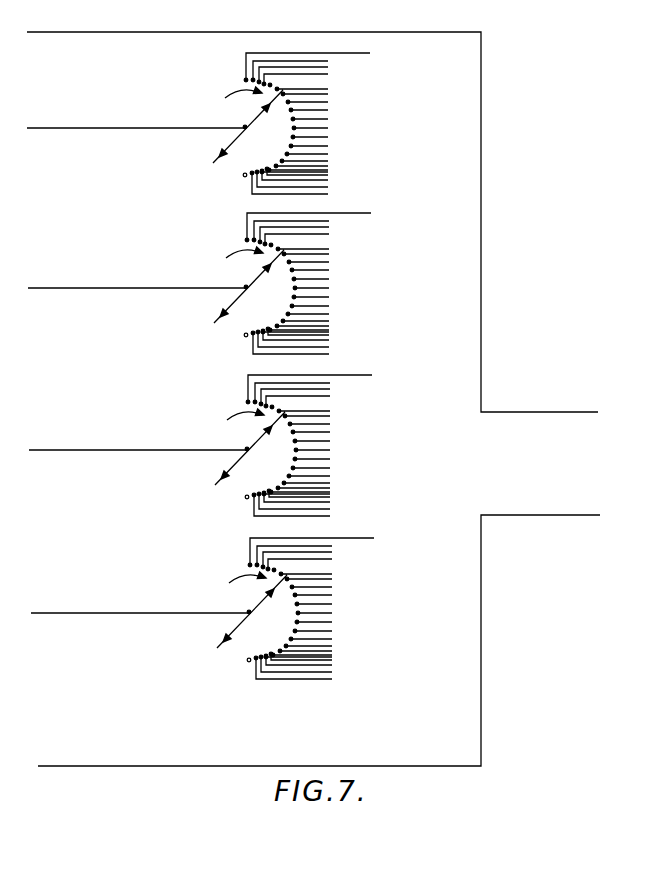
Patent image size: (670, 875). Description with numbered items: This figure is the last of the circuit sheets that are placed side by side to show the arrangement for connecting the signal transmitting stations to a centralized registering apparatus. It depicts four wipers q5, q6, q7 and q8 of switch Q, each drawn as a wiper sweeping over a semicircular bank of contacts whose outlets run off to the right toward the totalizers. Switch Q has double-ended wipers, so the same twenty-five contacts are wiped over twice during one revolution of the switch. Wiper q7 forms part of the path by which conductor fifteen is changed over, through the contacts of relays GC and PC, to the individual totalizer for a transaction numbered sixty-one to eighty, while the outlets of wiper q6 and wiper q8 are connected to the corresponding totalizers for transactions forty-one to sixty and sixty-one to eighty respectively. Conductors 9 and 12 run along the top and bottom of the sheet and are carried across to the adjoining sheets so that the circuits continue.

The conductor line 9 is at (312, 214).
The conductor line 12 is at (319, 632).
The quadrant unit q5 is at (198, 123).
The wiper q6 is at (199, 283).
The wiper q7 is at (200, 445).
The wiper q8 is at (202, 608).